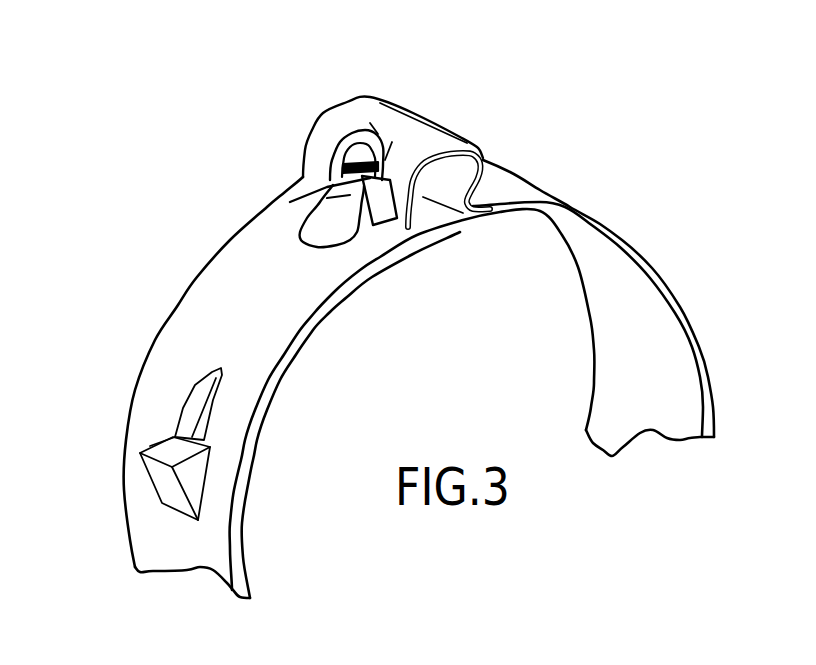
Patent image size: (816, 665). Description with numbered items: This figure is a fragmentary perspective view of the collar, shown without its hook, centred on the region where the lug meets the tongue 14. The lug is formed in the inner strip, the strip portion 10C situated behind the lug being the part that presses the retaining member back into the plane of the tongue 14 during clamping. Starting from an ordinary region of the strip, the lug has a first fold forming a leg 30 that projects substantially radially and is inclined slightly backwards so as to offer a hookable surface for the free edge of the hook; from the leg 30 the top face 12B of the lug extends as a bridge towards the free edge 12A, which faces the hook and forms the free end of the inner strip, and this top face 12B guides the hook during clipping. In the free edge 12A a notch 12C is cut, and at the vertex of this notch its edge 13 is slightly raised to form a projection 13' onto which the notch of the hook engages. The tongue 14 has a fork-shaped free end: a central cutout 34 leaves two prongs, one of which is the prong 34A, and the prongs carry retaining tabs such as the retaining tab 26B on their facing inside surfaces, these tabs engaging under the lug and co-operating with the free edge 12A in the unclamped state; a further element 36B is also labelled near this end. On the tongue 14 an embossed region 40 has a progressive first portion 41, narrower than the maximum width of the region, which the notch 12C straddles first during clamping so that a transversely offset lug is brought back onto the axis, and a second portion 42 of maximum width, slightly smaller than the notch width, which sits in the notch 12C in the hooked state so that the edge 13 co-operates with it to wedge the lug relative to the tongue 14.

The strip portion 10C is at (542, 188).
The tongue 14 is at (210, 303).
The free edge of the lug 12A is at (303, 173).
The top face of the lug 12B is at (343, 123).
The notch 12C is at (345, 148).
The edge of the notch 13 is at (418, 92).
The projection 13' is at (448, 116).
The leg 30 is at (497, 162).
The central cutout 34 is at (382, 224).
The prong 34A is at (445, 222).
The lobe top 36B is at (310, 207).
The retaining tab 26B is at (340, 243).
The embossed region 40 is at (140, 417).
The first portion 41 is at (187, 403).
The second portion 42 is at (157, 480).